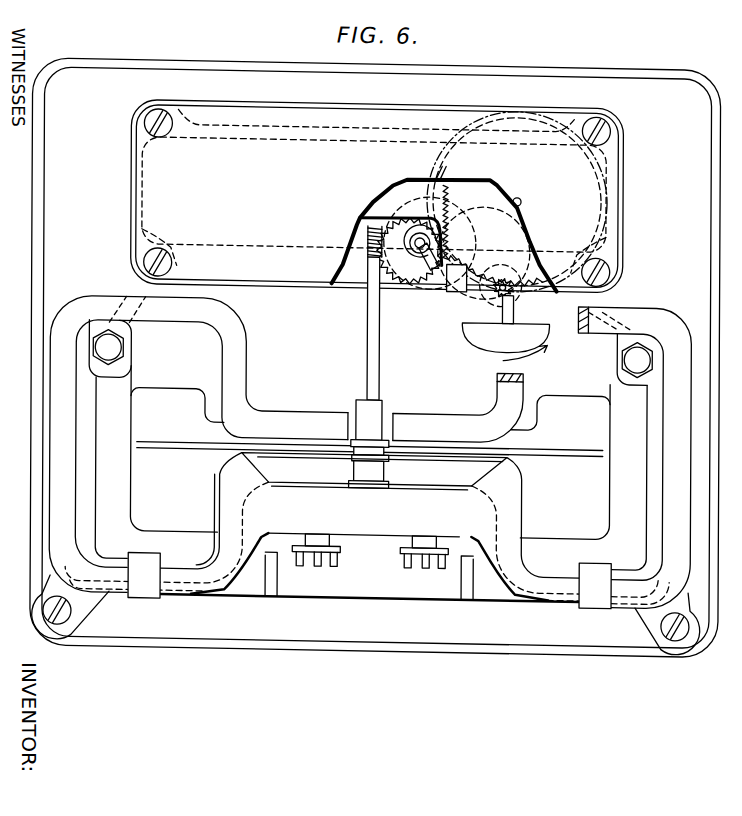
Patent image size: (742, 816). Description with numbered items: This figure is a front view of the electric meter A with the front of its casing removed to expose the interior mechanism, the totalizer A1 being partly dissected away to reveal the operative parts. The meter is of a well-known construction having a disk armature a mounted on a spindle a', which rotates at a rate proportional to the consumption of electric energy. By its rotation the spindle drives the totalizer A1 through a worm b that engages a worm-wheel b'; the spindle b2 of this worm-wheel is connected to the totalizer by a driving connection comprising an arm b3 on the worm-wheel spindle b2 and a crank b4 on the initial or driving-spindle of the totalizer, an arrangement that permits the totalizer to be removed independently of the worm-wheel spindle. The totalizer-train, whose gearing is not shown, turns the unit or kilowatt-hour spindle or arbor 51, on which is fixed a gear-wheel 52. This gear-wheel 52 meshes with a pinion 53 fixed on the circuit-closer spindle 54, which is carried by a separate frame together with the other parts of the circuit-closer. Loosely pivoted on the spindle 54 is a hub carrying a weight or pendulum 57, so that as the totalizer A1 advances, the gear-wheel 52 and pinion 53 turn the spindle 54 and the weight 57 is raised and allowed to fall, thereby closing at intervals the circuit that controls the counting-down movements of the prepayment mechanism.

The electric meter A is at (370, 452).
The totalizer A1 is at (377, 196).
The disk armature a is at (370, 434).
The spindle a' is at (380, 373).
The worm b is at (352, 234).
The worm-wheel b' is at (409, 263).
The worm-wheel spindle b2 is at (457, 221).
The arm b3 is at (446, 246).
The crank b4 is at (421, 260).
The unit spindle 51 is at (523, 190).
The gear-wheel 52 is at (534, 253).
The pinion 53 is at (511, 282).
The circuit-closer spindle 54 is at (494, 284).
The weight 57 is at (505, 328).